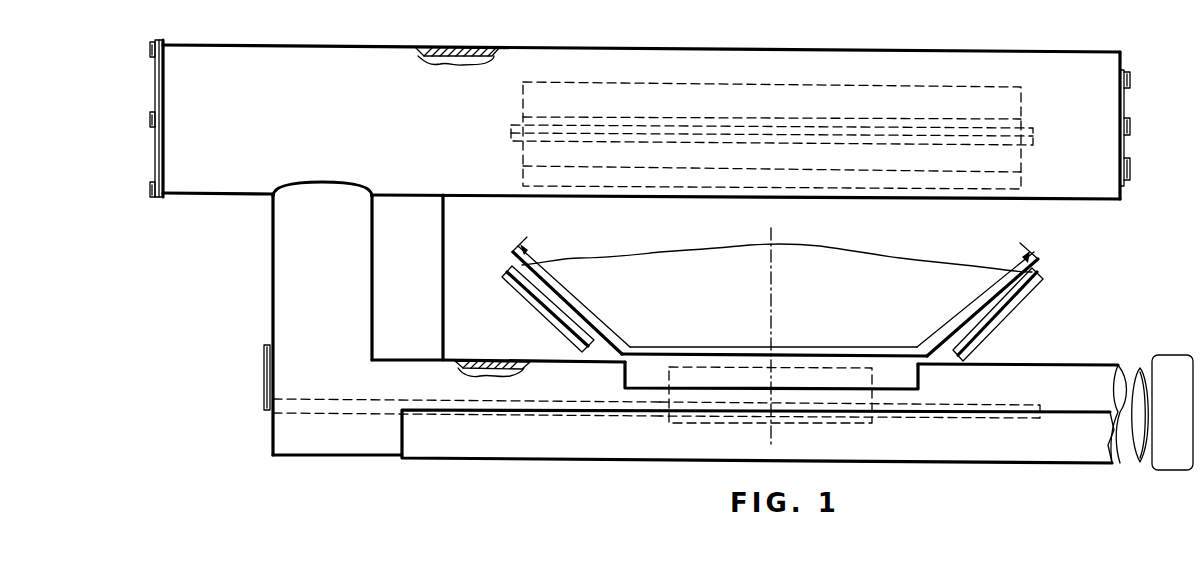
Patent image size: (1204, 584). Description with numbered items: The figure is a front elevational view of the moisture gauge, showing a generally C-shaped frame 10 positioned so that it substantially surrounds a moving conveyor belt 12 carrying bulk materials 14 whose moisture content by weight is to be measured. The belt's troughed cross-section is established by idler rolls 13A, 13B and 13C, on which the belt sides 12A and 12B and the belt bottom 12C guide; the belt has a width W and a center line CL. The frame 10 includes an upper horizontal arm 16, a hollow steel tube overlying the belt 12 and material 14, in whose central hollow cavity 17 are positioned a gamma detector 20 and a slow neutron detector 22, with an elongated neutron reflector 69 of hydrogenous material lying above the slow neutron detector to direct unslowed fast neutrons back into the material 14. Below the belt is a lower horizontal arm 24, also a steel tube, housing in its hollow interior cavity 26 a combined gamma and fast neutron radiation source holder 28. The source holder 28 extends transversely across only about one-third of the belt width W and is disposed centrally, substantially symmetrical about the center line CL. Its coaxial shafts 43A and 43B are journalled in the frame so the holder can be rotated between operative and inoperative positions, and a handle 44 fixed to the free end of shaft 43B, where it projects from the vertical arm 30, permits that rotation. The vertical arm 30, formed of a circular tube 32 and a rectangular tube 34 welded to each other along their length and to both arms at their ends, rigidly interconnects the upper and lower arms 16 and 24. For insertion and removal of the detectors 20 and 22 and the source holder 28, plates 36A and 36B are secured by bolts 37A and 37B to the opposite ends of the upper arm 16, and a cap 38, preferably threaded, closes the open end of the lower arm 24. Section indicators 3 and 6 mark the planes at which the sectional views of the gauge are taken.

The C-shaped frame 10 is at (1046, 37).
The conveyor belt 12 is at (775, 286).
The belt side 12A is at (986, 303).
The belt side 12B is at (576, 311).
The belt bottom 12C is at (774, 348).
The idler roll 13A is at (520, 288).
The idler roll 13B is at (1040, 300).
The idler roll 13C is at (912, 379).
The bulk materials 14 is at (888, 273).
The upper horizontal arm 16 is at (703, 48).
The hollow cavity 17 is at (444, 50).
The gamma detector 20 is at (1021, 105).
The slow neutron detector 22 is at (1021, 164).
The lower horizontal arm 24 is at (1088, 376).
The hollow interior cavity 26 is at (496, 376).
The combined gamma and fast neutron radiation source holder 28 is at (846, 424).
The vertical arm 30 is at (300, 240).
The circular tube 32 is at (291, 212).
The rectangular tube 34 is at (420, 260).
The plate 36A is at (1126, 113).
The plate 36B is at (154, 78).
The bolt 37A is at (1129, 78).
The bolt 37B is at (147, 198).
The cap 38 is at (1192, 328).
The shaft 43A is at (1024, 404).
The shaft 43B is at (357, 413).
The handle 44 is at (267, 372).
The neutron reflector 69 is at (1036, 135).
The belt width W is at (880, 328).
The center line CL is at (770, 329).
The section line 3- 3 is at (198, 210).
The section line 6- 6 is at (566, 48).